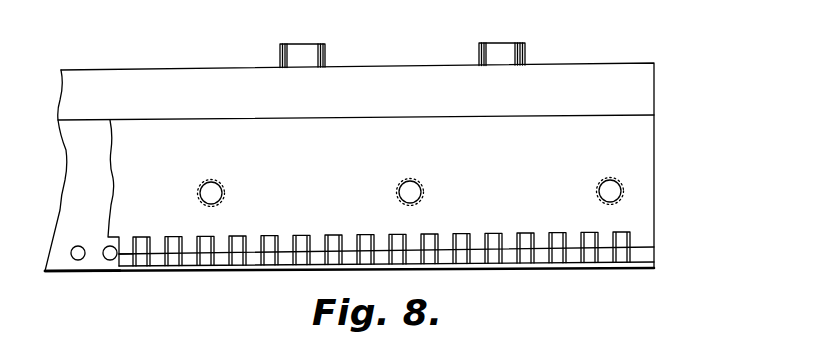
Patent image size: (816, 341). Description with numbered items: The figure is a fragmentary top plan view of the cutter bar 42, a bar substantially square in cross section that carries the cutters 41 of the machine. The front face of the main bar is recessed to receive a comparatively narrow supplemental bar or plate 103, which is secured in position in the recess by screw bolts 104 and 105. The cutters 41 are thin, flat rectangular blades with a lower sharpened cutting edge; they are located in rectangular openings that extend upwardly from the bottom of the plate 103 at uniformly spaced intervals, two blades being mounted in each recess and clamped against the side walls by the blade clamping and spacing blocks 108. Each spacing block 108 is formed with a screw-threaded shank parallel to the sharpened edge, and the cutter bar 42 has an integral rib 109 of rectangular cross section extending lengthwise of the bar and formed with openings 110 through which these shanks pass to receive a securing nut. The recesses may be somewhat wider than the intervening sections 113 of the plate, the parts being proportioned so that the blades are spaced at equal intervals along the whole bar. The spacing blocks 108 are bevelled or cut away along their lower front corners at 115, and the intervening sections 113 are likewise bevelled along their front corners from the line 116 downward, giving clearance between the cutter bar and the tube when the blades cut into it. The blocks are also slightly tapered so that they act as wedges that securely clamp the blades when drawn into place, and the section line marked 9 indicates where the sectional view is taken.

The cutter bar 42 is at (640, 89).
The screw bolt 104 is at (323, 52).
The supplemental bar or plate 103 is at (133, 160).
The screw bolt 105 is at (211, 193).
The spacing block 108 is at (334, 243).
The intervening section 113 is at (160, 242).
The bevel of spacing block 115 is at (176, 260).
The cutter 41 is at (246, 254).
The integral rib 109 is at (63, 265).
The opening 110 is at (78, 260).
The line 116 is at (127, 256).
The section line 9- 9 is at (480, 28).